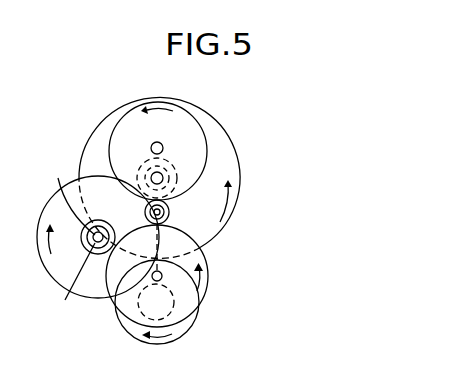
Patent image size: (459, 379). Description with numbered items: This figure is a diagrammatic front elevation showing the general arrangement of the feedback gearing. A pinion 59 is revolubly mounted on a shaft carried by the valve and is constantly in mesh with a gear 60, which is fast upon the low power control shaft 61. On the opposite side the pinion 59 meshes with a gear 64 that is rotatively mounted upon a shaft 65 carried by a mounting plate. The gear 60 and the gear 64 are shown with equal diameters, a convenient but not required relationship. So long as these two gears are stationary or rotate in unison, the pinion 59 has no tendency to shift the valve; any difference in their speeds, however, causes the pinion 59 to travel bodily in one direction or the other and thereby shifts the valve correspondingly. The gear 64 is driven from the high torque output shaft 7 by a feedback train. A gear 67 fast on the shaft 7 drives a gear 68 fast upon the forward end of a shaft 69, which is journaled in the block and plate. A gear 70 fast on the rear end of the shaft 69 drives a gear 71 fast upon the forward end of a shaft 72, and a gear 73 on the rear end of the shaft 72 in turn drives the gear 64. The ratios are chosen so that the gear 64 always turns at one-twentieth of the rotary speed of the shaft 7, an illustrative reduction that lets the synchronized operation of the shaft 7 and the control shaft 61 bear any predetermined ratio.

The high torque output shaft 7 is at (166, 309).
The pinion 59 is at (170, 212).
The gear 60 is at (133, 118).
The low power control shaft 61 is at (163, 146).
The gear 64 is at (204, 258).
The shaft 65 is at (163, 276).
The gear 67 is at (133, 331).
The gear 68 is at (237, 184).
The shaft 69 is at (179, 178).
The gear 70 is at (171, 166).
The gear 71 is at (43, 213).
The shaft 72 is at (71, 196).
The gear 73 is at (70, 289).